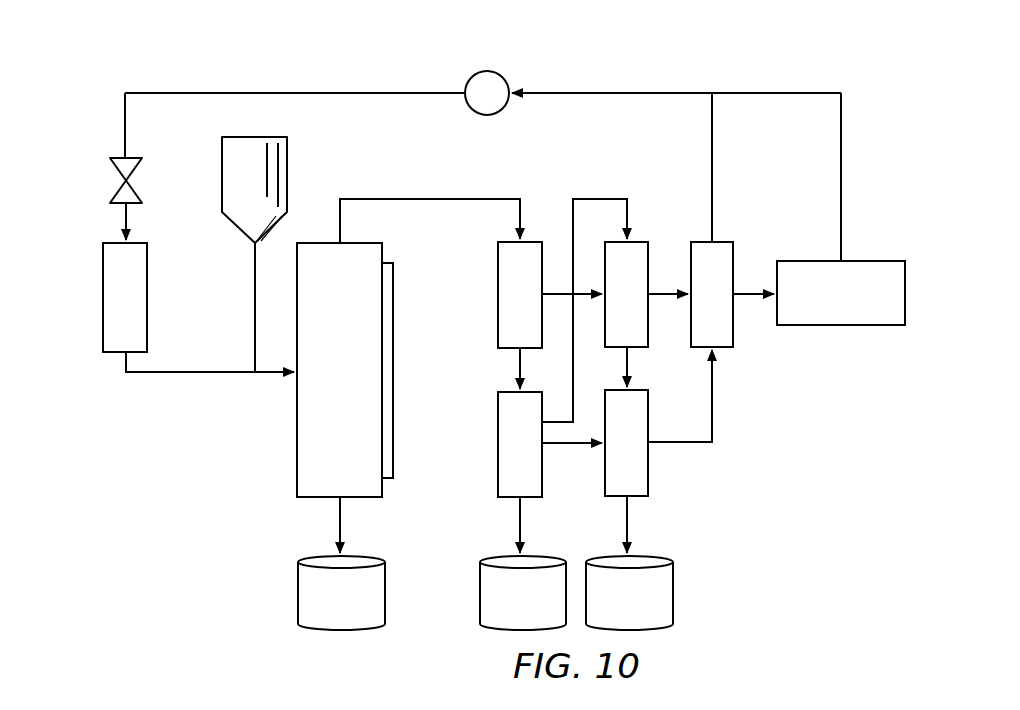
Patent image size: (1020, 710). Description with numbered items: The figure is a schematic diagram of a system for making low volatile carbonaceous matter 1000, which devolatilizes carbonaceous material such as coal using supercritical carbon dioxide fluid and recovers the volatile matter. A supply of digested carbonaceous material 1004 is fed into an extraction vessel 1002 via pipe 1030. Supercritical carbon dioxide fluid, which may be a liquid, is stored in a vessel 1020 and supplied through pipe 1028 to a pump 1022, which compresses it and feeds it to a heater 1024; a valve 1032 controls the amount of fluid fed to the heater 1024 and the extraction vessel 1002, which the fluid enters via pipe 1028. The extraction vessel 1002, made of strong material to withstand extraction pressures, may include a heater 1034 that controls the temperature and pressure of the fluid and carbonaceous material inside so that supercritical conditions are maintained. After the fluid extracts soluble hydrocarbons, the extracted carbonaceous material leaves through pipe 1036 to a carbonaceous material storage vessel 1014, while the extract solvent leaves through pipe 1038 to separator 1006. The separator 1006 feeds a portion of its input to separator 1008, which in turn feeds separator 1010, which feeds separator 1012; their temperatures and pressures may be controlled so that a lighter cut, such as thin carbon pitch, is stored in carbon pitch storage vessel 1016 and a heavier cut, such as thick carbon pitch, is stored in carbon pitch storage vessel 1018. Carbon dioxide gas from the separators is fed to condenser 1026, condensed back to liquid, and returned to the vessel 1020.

The system for making low volatile carbonaceous matter 1000 is at (672, 65).
The extraction vessel 1002 is at (367, 383).
The supply of digested carbonaceous material 1004 is at (289, 167).
The separator 1006 is at (497, 305).
The separator 1008 is at (497, 455).
The separator 1010 is at (638, 240).
The separator 1012 is at (650, 465).
The carbonaceous material storage vessel 1014 is at (297, 594).
The carbon pitch storage vessel 1016 is at (479, 594).
The carbon pitch storage vessel 1018 is at (675, 592).
The vessel 1020 is at (867, 305).
The pump 1022 is at (488, 116).
The heater 1024 is at (103, 298).
The condenser 1026 is at (722, 240).
The pipe 1028 is at (200, 375).
The pipe 1030 is at (253, 306).
The valve 1032 is at (115, 150).
The heater 1034 is at (395, 385).
The pipe 1036 is at (338, 522).
The pipe 1038 is at (456, 201).